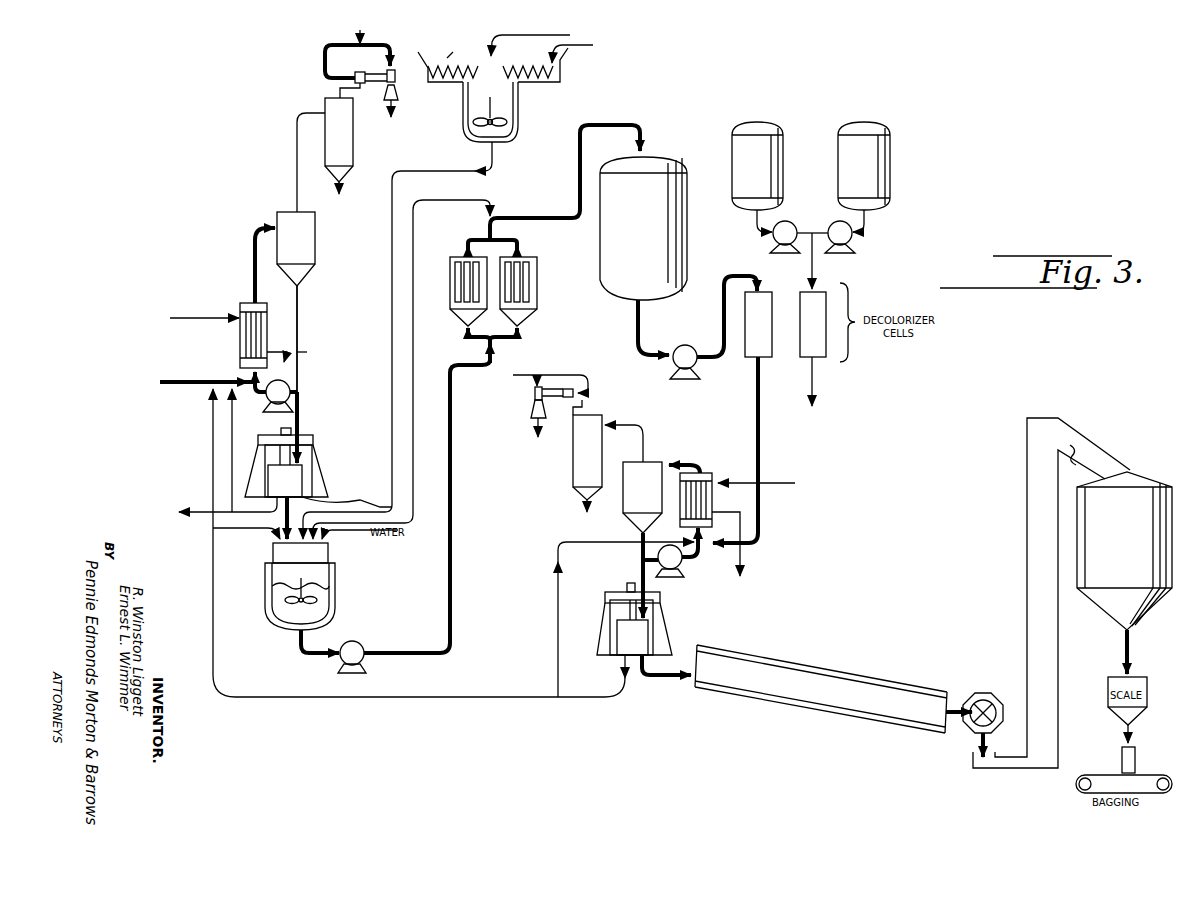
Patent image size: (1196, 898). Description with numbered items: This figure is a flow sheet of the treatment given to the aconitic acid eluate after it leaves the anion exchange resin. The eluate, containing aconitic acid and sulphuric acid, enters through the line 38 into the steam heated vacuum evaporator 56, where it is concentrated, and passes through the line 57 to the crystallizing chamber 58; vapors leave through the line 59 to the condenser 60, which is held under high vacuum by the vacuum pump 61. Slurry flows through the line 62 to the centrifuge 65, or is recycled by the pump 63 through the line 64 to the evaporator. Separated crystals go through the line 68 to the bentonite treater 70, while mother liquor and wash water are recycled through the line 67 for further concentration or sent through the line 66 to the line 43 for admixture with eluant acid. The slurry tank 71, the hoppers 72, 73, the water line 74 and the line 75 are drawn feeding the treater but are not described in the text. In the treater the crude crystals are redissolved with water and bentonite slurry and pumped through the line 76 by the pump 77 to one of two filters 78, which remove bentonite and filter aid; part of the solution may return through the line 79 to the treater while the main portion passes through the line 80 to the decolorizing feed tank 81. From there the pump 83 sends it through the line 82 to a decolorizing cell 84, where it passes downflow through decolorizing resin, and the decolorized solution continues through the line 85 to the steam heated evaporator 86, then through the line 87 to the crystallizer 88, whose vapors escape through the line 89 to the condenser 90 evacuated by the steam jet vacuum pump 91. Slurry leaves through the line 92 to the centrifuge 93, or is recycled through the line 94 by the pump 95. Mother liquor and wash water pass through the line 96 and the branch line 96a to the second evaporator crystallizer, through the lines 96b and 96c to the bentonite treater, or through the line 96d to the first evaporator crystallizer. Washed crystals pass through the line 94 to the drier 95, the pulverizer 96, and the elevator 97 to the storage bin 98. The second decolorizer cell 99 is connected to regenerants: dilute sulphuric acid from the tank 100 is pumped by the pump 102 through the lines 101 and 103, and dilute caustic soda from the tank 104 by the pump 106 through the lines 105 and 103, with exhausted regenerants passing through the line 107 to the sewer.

The line 38 is at (178, 382).
The line 43 is at (195, 512).
The steam heated vacuum evaporator 56 is at (239, 340).
The line 57 is at (255, 268).
The crystallizing chamber 58 is at (296, 249).
The line 59 is at (296, 167).
The condenser 60 is at (341, 146).
The vacuum pump 61 is at (372, 64).
The line 62 is at (299, 318).
The pump 63 is at (272, 413).
The line 64 is at (268, 397).
The centrifuge 65 is at (295, 480).
The line 66 is at (228, 514).
The line 67 is at (233, 472).
The line 68 is at (308, 505).
The bentonite treater 70 is at (331, 586).
The slurry tank 71 is at (519, 112).
The filteraid hopper 72 is at (447, 84).
The bentonite hopper 73 is at (545, 84).
The water line 74 is at (490, 42).
The slurry line 75 is at (437, 171).
The line 76 is at (327, 650).
The pump 77 is at (367, 649).
The filters 78 is at (462, 314).
The line 79 is at (457, 203).
The line 80 is at (562, 215).
The decolorizing feed tank 81 is at (643, 228).
The line 82 is at (638, 332).
The pump 83 is at (687, 348).
The decolorizing cell 84 is at (758, 324).
The line 85 is at (757, 395).
The steam heated evaporator 86 is at (710, 476).
The line 87 is at (692, 460).
The crystallizer 88 is at (648, 462).
The line 89 is at (648, 432).
The condenser 90 is at (574, 464).
The steam jet vacuum pump 91 is at (563, 386).
The line 92 is at (641, 552).
The centrifuge 93 is at (640, 637).
The line 94 is at (650, 565).
The pump / drier 95 is at (682, 562).
The line / pulverizer 96 is at (598, 699).
The branch line 96a is at (558, 617).
The line 96b is at (432, 699).
The line 96c is at (270, 530).
The line 96d is at (213, 455).
The elevator 97 is at (1027, 540).
The storage bin 98 is at (1124, 573).
The second decolorizer cell 99 is at (813, 324).
The tank 100 is at (757, 144).
The line 101 is at (755, 223).
The pump 102 is at (787, 226).
The line 103 is at (810, 268).
The tank 104 is at (864, 144).
The line 105 is at (867, 225).
The pump 106 is at (836, 251).
The line 107 is at (814, 375).